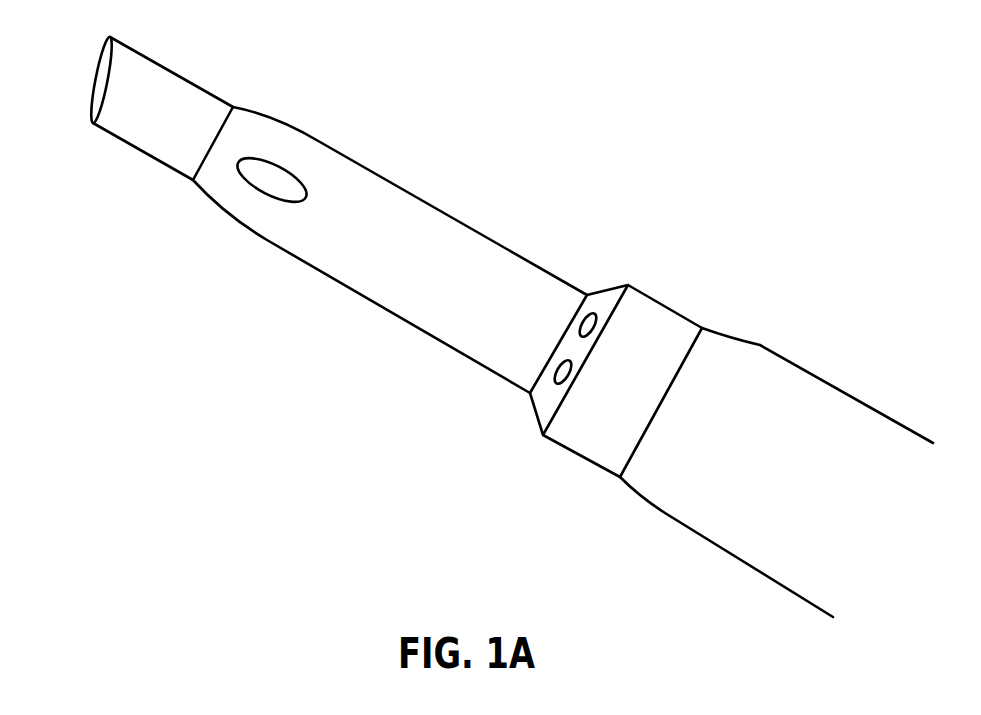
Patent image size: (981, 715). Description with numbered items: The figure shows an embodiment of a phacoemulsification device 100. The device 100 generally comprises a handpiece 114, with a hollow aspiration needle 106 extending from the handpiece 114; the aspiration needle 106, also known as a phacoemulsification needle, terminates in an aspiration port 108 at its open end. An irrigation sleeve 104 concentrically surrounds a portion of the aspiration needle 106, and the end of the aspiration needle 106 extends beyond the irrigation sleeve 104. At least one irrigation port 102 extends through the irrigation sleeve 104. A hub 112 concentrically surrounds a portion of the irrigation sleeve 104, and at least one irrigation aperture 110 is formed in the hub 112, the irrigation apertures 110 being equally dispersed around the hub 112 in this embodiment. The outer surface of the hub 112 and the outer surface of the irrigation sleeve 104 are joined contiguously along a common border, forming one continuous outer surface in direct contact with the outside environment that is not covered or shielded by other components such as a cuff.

The phacoemulsification device 100 is at (632, 100).
The irrigation port 102 is at (267, 195).
The irrigation sleeve 104 is at (375, 303).
The hollow aspiration needle 106 is at (148, 154).
The aspiration port 108 is at (90, 75).
The irrigation aperture 110 is at (570, 374).
The hub 112 is at (608, 289).
The handpiece 114 is at (823, 380).